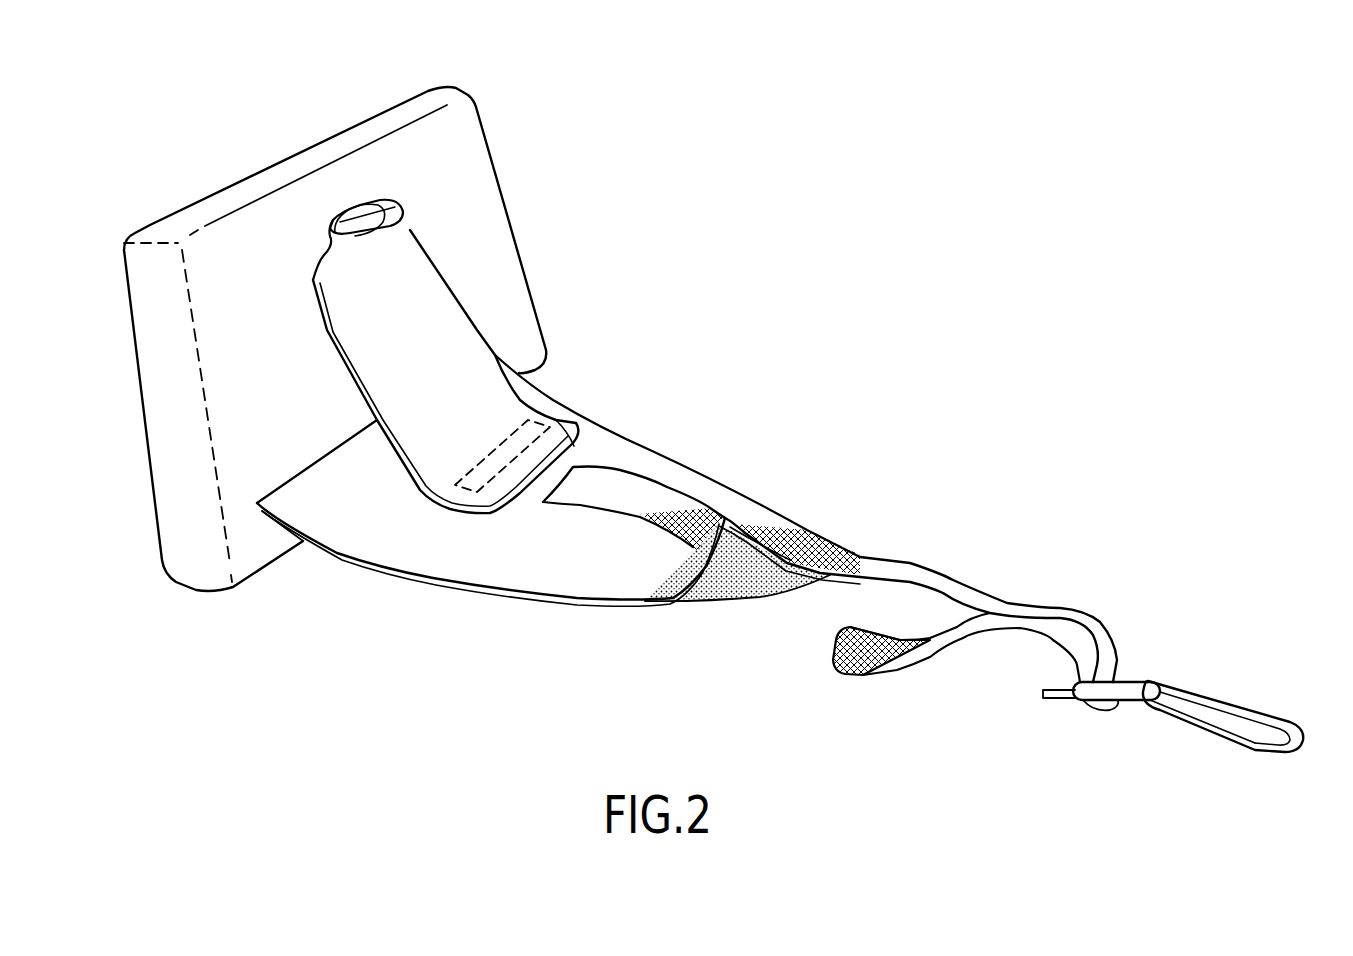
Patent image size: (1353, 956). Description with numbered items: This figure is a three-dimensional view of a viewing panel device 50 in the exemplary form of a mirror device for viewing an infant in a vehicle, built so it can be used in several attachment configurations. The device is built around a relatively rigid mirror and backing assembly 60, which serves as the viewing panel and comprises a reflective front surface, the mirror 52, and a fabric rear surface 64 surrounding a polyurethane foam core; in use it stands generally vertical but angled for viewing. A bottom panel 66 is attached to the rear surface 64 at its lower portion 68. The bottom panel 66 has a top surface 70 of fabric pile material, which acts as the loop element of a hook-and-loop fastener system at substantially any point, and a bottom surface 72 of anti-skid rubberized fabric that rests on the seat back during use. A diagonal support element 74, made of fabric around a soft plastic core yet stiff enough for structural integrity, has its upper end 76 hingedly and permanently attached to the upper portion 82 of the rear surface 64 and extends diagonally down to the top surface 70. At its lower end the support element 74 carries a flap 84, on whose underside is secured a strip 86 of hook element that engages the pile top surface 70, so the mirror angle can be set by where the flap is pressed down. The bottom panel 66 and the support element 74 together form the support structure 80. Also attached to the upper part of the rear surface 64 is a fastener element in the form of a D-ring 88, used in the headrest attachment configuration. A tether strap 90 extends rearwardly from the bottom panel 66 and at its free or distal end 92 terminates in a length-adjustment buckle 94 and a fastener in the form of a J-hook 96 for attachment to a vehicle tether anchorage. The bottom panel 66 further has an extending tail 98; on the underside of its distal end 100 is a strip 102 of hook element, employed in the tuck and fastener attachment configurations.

The viewing panel device 50 is at (696, 183).
The reflective front surface 52 is at (140, 379).
The mirror and backing assembly 60 is at (499, 146).
The fabric rear surface 64 is at (281, 388).
The bottom panel 66 is at (487, 548).
The lower portion 68 is at (277, 553).
The top surface 70 is at (578, 559).
The bottom surface 72 is at (597, 597).
The diagonal support element 74 is at (447, 338).
The upper end 76 is at (400, 240).
The support structure 80 is at (594, 351).
The upper portion 82 is at (254, 259).
The flap 84 is at (565, 432).
The hook element strip 86 is at (490, 455).
The D-ring 88 is at (363, 222).
The tether strap 90 is at (917, 563).
The distal end 92 is at (1178, 607).
The length-adjustment buckle 94 is at (1133, 697).
The J-hook 96 is at (1248, 697).
The extending tail 98 is at (727, 492).
The distal end 100 is at (783, 555).
The hook element strip 102 is at (760, 598).